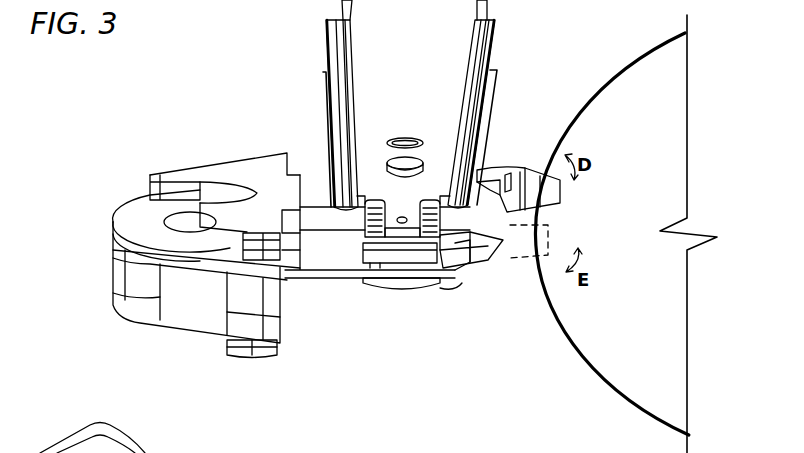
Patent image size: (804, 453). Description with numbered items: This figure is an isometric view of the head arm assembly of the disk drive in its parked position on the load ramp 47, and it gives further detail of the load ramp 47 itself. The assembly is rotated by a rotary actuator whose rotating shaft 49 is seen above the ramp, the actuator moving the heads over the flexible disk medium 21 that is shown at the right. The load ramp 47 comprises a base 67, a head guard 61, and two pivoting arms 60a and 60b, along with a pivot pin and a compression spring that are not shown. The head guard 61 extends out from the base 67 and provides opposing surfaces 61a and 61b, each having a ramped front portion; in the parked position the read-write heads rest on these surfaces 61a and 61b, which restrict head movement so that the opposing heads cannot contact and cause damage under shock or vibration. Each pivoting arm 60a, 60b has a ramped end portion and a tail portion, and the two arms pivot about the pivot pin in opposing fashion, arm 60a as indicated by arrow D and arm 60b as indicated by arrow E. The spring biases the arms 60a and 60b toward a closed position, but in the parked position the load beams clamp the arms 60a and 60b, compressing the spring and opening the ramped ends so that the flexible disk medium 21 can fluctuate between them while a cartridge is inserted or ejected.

The flexible disk medium 21 is at (667, 362).
The load ramp 47 is at (233, 367).
The rotating shaft 49 is at (298, 4).
The pivoting arm 60a is at (548, 157).
The pivoting arm 60b is at (533, 268).
The head guard 61 is at (423, 278).
The opposing surface 61a is at (333, 252).
The opposing surface 61b is at (457, 285).
The base 67 is at (130, 220).